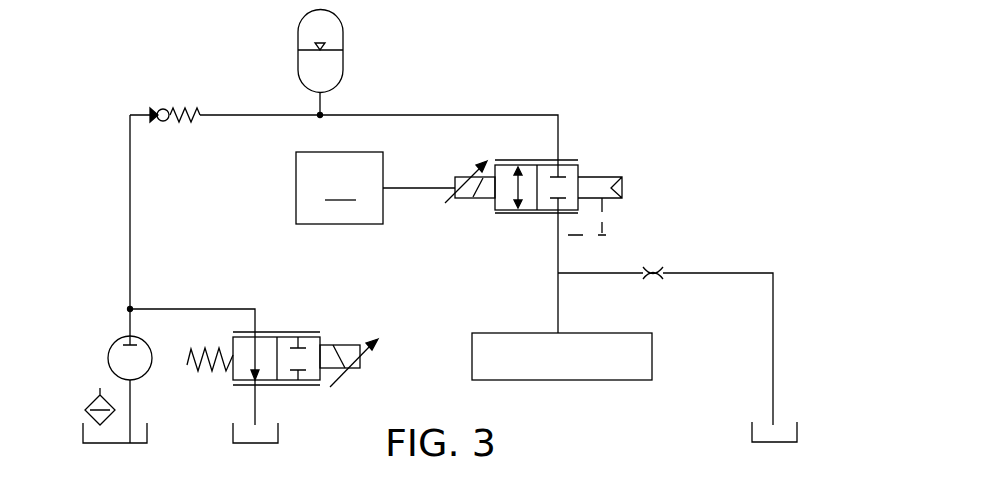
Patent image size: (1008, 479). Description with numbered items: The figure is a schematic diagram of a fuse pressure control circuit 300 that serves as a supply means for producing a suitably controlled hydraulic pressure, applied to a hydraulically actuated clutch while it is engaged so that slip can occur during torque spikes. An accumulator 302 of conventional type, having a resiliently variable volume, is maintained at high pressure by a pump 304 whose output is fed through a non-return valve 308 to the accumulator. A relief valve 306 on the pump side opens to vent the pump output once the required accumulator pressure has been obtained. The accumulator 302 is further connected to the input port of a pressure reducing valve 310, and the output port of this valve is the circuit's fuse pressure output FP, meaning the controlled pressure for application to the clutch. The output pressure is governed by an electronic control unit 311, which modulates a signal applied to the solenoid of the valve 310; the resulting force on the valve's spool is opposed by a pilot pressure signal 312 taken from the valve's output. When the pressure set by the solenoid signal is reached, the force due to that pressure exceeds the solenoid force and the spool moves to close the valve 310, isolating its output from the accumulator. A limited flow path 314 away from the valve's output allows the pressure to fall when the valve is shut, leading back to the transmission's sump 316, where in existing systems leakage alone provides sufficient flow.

The circuit 300 is at (577, 71).
The accumulator 302 is at (343, 43).
The pump 304 is at (108, 358).
The relief valve 306 is at (310, 387).
The non-return valve 308 is at (157, 109).
The pressure reducing valve 310 is at (578, 160).
The electronic control unit 311 is at (339, 188).
The pilot pressure signal 312 is at (612, 230).
The limited flow path 314 is at (740, 272).
The sump 316 is at (752, 432).